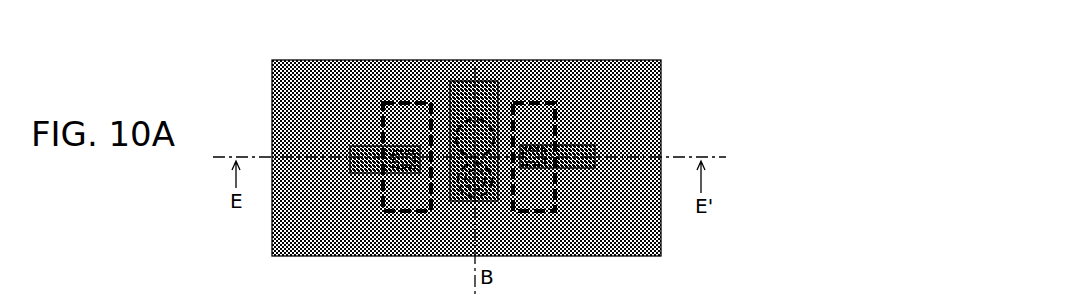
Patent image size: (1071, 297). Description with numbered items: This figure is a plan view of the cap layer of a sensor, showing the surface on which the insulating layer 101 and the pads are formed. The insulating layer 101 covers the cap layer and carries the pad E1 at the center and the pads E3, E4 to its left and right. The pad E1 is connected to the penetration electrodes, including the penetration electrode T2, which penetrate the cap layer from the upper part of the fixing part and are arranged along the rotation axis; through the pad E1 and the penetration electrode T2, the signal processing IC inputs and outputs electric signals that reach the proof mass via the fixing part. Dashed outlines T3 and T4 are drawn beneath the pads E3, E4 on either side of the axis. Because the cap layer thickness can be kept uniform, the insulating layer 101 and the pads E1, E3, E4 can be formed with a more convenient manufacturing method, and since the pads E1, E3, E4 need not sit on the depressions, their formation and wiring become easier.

The insulating layer 101 is at (617, 62).
The pad E1 is at (452, 88).
The pad E3 is at (355, 138).
The pad E4 is at (573, 137).
The penetration electrode T2 is at (470, 110).
The third transistor T3 is at (396, 110).
The fourth transistor T4 is at (527, 110).